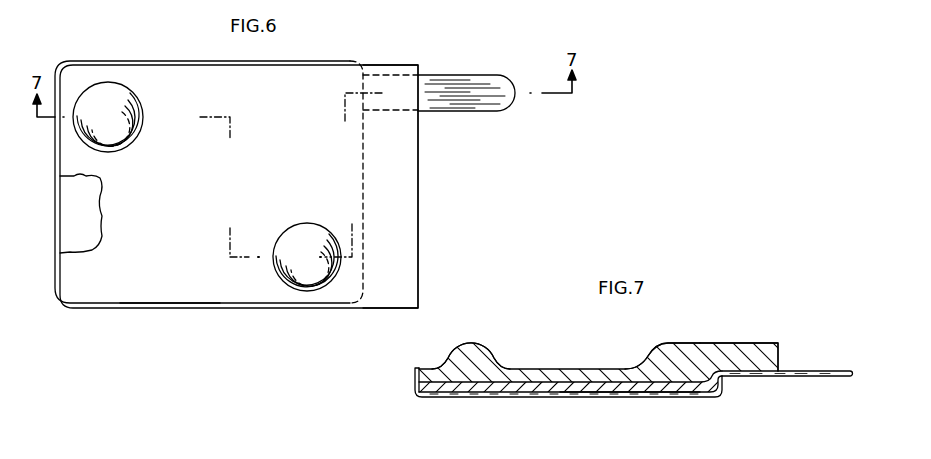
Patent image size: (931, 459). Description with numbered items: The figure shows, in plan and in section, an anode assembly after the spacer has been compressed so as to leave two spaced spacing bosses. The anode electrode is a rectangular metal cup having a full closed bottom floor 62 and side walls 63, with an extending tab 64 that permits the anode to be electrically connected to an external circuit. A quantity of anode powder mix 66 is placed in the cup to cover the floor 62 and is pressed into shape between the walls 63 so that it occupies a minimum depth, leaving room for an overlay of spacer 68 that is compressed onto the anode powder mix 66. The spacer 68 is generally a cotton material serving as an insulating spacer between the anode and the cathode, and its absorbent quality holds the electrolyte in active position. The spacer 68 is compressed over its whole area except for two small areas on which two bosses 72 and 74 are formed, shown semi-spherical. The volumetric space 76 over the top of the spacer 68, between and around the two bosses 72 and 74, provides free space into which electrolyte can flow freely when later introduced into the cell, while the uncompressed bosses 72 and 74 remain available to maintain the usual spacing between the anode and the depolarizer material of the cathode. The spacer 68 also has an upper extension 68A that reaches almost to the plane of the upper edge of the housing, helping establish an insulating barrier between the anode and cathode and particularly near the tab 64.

In FIG. 7, the bottom floor 62 is at (519, 397).
In FIG. 6, the side walls 63 is at (162, 60).
In FIG. 7, the side walls 63 is at (415, 375).
In FIG. 6, the tab 64 is at (490, 98).
In FIG. 7, the tab 64 is at (808, 378).
In FIG. 6, the anode powder mix 66 is at (88, 208).
In FIG. 7, the anode powder mix 66 is at (622, 384).
In FIG. 6, the spacer 68 is at (118, 276).
In FIG. 7, the spacer 68 is at (582, 369).
In FIG. 6, the upper extension of spacer 68A is at (404, 187).
In FIG. 7, the upper extension of spacer 68A is at (742, 350).
In FIG. 6, the boss 72 is at (120, 130).
In FIG. 7, the boss 72 is at (448, 353).
In FIG. 6, the boss 74 is at (292, 270).
In FIG. 7, the boss 74 is at (672, 356).
In FIG. 6, the volumetric space 76 is at (171, 276).
In FIG. 7, the volumetric space 76 is at (553, 360).